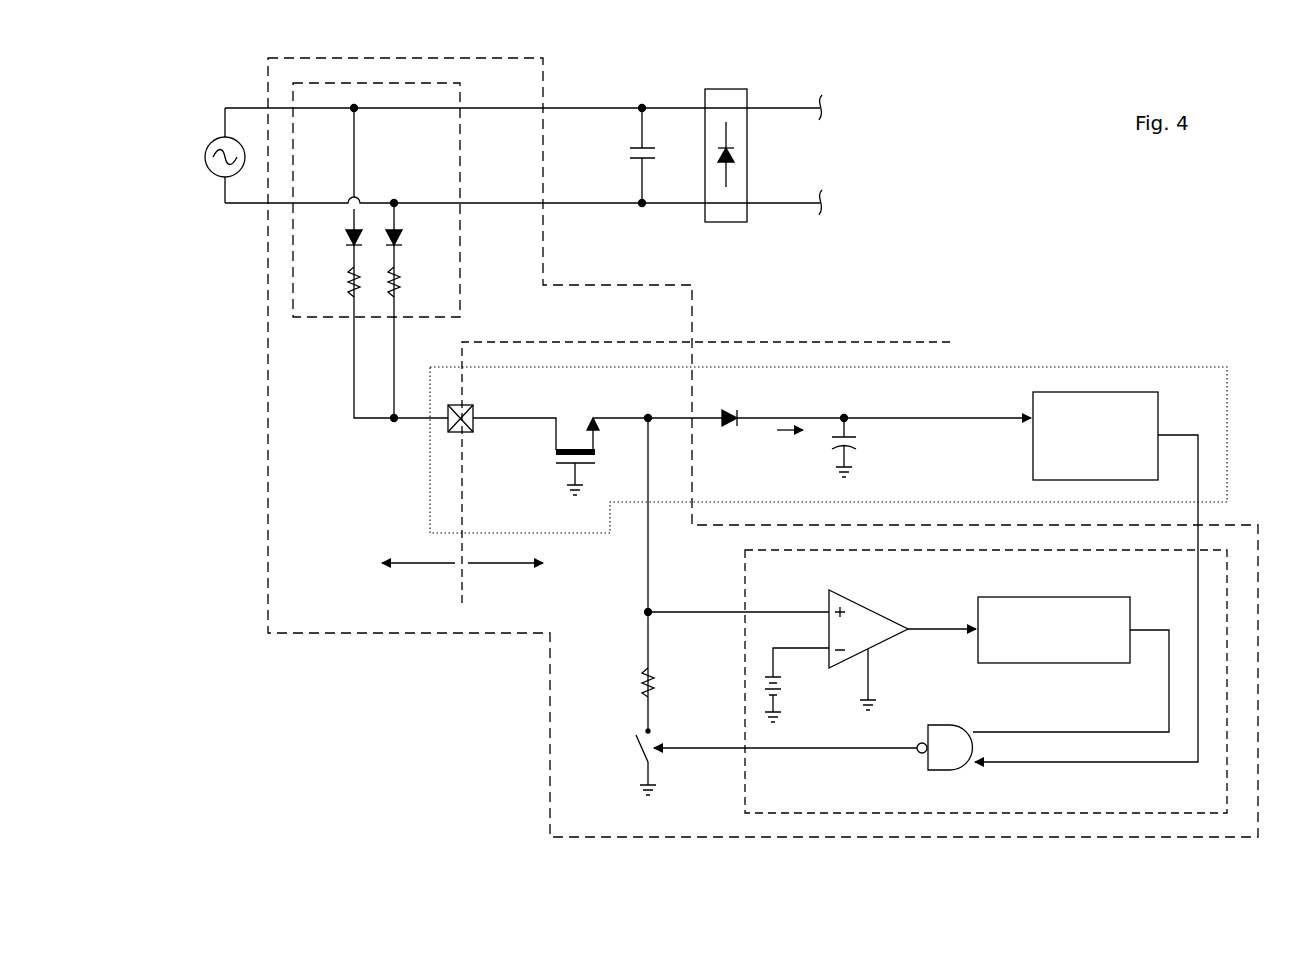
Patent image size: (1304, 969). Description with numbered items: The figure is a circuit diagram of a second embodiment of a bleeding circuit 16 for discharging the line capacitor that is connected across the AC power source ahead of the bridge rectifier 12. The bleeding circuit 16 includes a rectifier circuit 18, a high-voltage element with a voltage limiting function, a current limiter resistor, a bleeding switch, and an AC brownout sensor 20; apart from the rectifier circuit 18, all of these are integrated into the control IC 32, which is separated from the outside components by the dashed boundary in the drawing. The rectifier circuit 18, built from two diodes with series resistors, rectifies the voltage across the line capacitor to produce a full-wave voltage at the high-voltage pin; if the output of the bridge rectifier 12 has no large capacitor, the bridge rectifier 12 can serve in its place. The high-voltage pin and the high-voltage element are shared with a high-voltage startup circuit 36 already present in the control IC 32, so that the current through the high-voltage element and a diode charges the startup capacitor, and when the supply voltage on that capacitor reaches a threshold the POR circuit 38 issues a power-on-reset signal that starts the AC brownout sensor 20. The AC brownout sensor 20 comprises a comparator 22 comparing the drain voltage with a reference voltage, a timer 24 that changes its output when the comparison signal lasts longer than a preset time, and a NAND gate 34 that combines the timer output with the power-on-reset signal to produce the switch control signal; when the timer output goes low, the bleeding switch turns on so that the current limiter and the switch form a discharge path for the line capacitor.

The bridge rectifier 12 is at (747, 155).
The bleeding circuit 16 is at (550, 740).
The rectifier circuit 18 is at (293, 258).
The AC brownout sensor 20 is at (745, 572).
The comparator 22 is at (872, 602).
The timer 24 is at (1028, 663).
The control IC 32 is at (820, 342).
The NAND gate 34 is at (952, 725).
The high-voltage startup circuit 36 is at (1035, 367).
The POR circuit 38 is at (1033, 452).